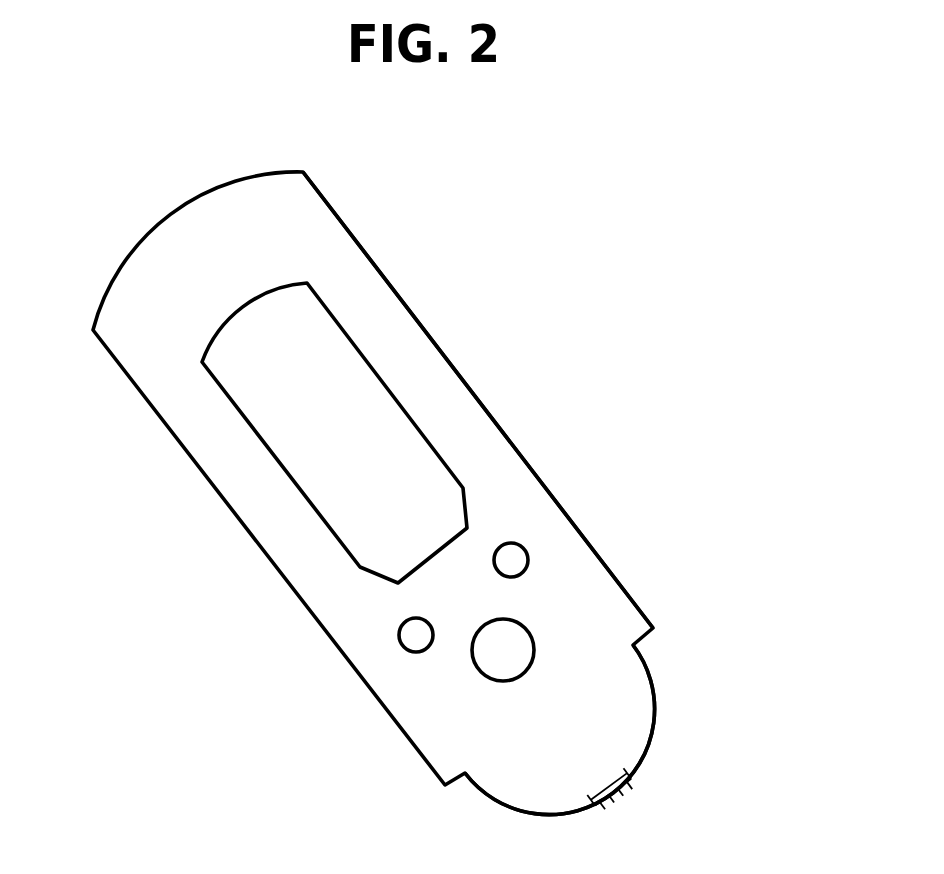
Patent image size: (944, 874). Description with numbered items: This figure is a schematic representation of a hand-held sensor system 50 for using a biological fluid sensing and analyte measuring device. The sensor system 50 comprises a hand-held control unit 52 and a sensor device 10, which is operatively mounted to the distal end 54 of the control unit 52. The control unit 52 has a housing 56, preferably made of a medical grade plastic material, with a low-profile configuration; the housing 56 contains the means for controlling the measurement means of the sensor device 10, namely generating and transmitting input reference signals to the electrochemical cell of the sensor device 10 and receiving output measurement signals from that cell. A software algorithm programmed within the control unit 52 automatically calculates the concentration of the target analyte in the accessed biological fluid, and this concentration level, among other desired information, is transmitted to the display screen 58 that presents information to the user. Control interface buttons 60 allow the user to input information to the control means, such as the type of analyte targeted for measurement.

The sensor device 10 is at (696, 807).
The sensor system 50 is at (430, 478).
The hand-held control unit 52 is at (583, 580).
The distal end 54 is at (605, 717).
The housing 56 is at (357, 238).
The display screen 58 is at (287, 392).
The control interface buttons 60 is at (416, 636).